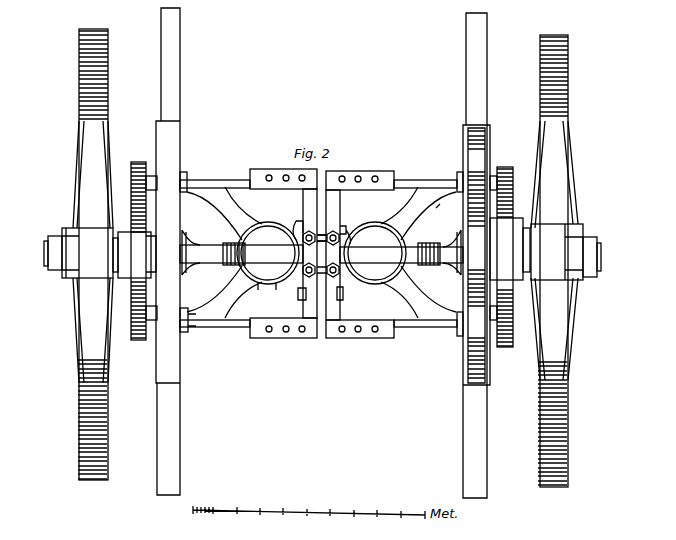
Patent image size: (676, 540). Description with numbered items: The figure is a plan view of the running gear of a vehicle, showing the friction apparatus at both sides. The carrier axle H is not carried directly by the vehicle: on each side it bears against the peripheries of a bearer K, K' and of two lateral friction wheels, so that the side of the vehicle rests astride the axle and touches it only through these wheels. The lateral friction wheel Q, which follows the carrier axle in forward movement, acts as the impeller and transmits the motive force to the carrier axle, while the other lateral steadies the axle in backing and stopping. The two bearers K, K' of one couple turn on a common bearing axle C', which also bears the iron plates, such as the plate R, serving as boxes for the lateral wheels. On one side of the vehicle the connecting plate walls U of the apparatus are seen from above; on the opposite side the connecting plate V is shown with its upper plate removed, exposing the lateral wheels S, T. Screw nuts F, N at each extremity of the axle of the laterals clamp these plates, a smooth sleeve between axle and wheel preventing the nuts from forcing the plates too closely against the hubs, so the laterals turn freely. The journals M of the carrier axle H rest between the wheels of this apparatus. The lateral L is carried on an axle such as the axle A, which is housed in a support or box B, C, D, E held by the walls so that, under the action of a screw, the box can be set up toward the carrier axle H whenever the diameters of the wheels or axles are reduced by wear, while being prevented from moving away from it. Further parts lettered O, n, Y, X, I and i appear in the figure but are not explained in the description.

The carrier axle H is at (322, 258).
The bearer K is at (226, 251).
The bearer K' is at (407, 257).
The connecting plate walls U is at (168, 251).
The connecting plate V is at (476, 255).
The lateral friction wheel S is at (476, 178).
The lateral friction wheel T is at (476, 324).
The support or box of the lateral axle B is at (321, 180).
The axle of the lateral A is at (321, 324).
The support or box of the lateral axle C is at (329, 252).
The bearing axle C' is at (268, 250).
The lateral friction wheel Q is at (283, 172).
The plate R is at (283, 336).
The top plate O is at (360, 238).
The bottom plate n is at (360, 336).
The vertical plate Y is at (310, 253).
The journal of the carrier axle M is at (315, 232).
The screw nut N is at (315, 278).
The nut X is at (333, 278).
The screw nut F is at (293, 228).
The support or box of the lateral axle E is at (350, 230).
The ring i is at (375, 249).
The stud I is at (304, 289).
The lateral L is at (192, 318).
The support or box of the lateral axle D is at (440, 200).